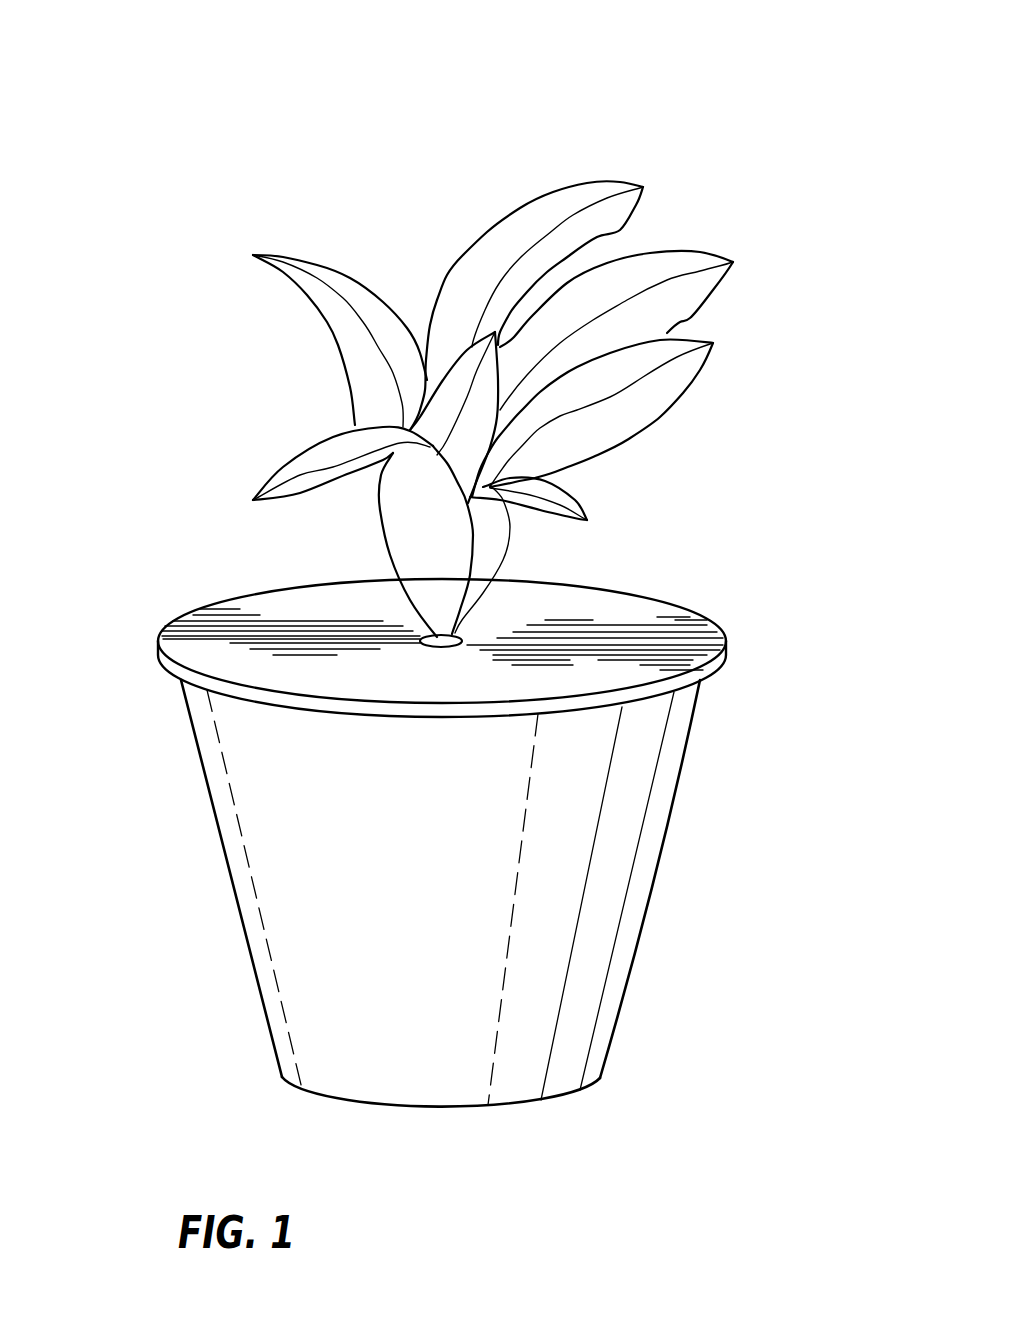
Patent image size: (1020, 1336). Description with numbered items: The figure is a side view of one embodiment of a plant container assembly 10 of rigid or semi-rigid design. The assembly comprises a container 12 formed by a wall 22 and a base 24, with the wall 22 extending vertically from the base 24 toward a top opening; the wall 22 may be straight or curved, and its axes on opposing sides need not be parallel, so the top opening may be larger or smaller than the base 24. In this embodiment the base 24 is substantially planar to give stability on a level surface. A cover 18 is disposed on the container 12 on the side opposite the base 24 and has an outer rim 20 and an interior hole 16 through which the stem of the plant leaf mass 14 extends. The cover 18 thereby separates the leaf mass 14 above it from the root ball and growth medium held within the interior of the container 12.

The plant container assembly 10 is at (758, 172).
The container 12 is at (755, 660).
The plant leaf mass 14 is at (160, 174).
The interior hole 16 is at (425, 642).
The cover 18 is at (612, 615).
The outer rim 20 is at (195, 678).
The wall 22 is at (293, 921).
The base 24 is at (520, 1105).